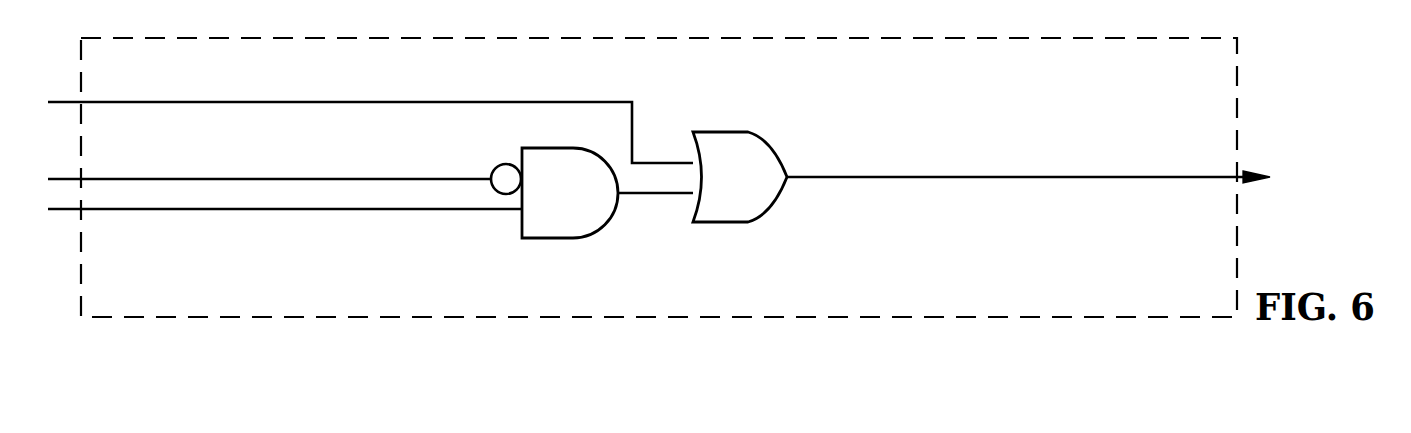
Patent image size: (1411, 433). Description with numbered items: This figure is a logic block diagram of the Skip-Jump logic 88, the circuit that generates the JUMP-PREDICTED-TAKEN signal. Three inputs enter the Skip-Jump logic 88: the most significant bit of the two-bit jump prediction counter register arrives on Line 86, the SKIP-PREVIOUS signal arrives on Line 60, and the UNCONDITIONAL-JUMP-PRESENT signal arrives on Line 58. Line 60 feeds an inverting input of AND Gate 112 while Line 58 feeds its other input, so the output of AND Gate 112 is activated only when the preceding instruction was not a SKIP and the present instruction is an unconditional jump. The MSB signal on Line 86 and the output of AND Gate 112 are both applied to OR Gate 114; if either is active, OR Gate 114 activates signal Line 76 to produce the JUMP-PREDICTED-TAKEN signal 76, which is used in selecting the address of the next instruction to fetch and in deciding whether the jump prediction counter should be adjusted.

The Skip-Jump logic 88 is at (80, 86).
The line carrying the MSB signal 86 is at (634, 138).
The line carrying the SKIP-PREVIOUS signal 60 is at (458, 177).
The line carrying the UNCONDITIONAL-JUMP-PRESENT signal 58 is at (460, 208).
The AND gate 112 is at (560, 147).
The OR gate 114 is at (728, 225).
The JUMP-PREDICTED-TAKEN signal line 76 is at (1046, 178).